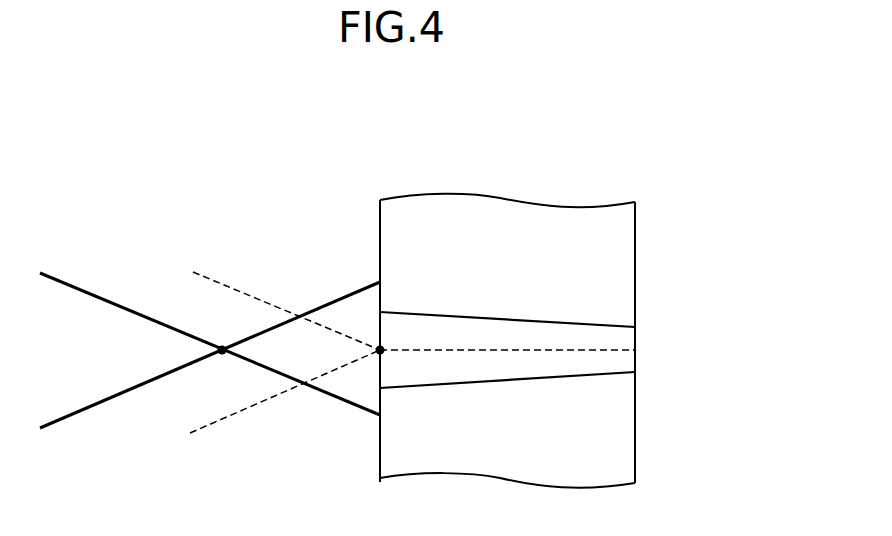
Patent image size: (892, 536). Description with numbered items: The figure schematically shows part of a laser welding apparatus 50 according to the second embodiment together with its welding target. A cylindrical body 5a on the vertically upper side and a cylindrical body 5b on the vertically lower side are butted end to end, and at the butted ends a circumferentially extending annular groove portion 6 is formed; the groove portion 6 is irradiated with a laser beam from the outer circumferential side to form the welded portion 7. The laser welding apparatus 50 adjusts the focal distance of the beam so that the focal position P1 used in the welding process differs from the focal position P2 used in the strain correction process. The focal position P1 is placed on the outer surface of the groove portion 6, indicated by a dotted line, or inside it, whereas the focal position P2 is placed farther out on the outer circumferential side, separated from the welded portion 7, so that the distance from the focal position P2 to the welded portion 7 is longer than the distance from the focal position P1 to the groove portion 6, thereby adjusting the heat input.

The laser welding apparatus 50 is at (387, 149).
The cylindrical body of a vertically upper side 5a is at (635, 231).
The cylindrical body of a vertically lower side 5b is at (635, 435).
The groove portion 6 is at (638, 349).
The welded portion 7 is at (638, 362).
The focal position of the laser beam in the welding process P1 is at (380, 349).
The focal position of the laser beam in the strain correction process P2 is at (222, 349).